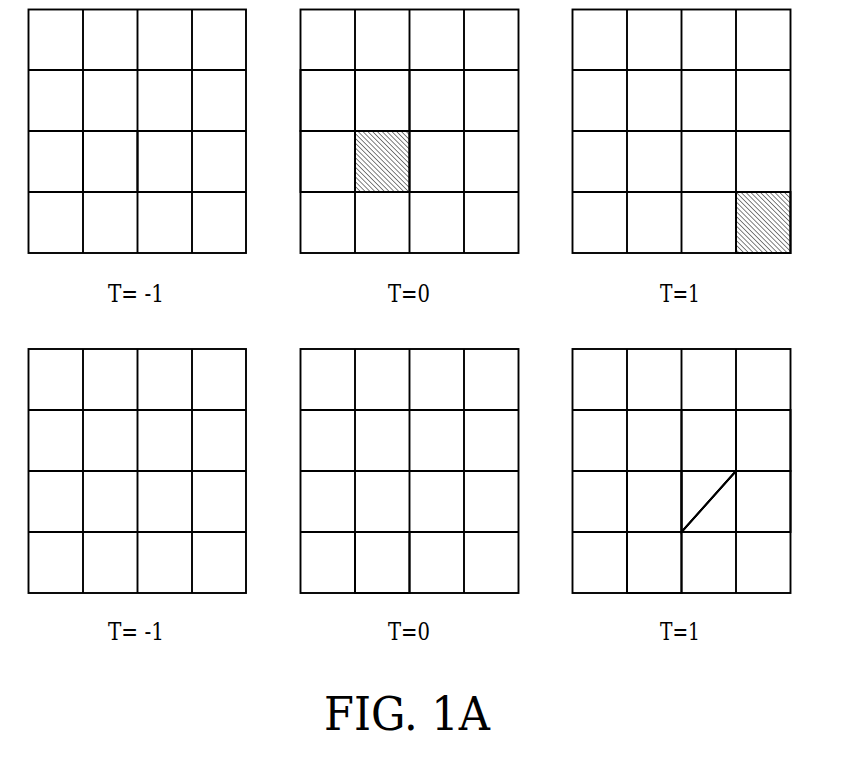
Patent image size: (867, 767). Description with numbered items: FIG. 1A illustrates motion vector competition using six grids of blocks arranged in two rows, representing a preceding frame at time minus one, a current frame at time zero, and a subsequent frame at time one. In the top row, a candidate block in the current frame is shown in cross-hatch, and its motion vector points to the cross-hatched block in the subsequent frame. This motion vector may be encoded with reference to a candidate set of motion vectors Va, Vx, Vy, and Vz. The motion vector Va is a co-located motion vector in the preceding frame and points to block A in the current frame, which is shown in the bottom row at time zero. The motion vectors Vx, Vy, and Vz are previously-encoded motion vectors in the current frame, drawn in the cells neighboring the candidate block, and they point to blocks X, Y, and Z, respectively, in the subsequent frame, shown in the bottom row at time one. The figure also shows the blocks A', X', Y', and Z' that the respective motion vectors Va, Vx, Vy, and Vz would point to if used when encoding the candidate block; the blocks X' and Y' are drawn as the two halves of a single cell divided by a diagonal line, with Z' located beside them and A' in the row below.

The co-located motion vector Va is at (110, 161).
The previously-encoded motion vector Vx is at (328, 100).
The previously-encoded motion vector Vy is at (328, 161).
The previously-encoded motion vector Vz is at (382, 100).
The block A is at (382, 562).
The block X is at (709, 440).
The block Y is at (654, 501).
The block Z is at (763, 440).
The block X' is at (709, 501).
The block Y' is at (709, 501).
The block Z' is at (763, 501).
The block A' is at (654, 562).